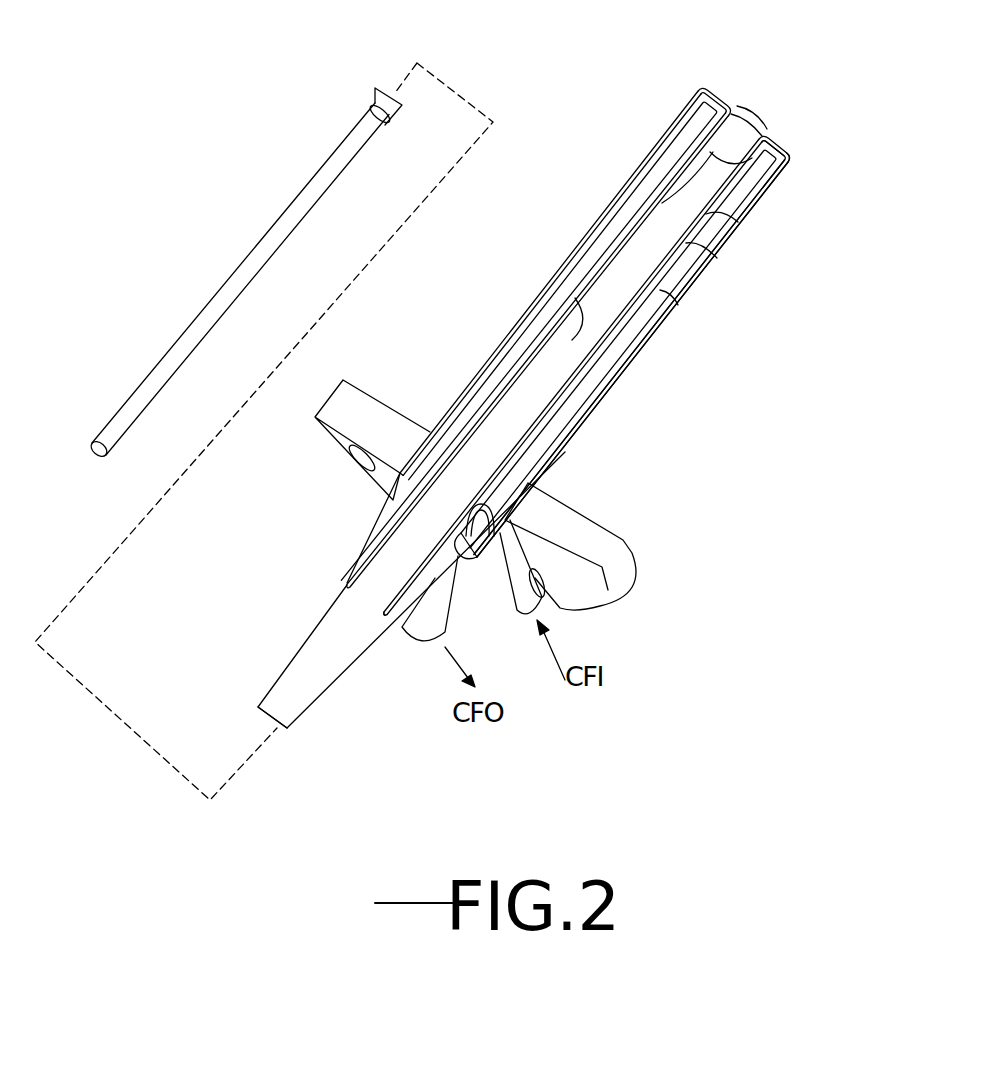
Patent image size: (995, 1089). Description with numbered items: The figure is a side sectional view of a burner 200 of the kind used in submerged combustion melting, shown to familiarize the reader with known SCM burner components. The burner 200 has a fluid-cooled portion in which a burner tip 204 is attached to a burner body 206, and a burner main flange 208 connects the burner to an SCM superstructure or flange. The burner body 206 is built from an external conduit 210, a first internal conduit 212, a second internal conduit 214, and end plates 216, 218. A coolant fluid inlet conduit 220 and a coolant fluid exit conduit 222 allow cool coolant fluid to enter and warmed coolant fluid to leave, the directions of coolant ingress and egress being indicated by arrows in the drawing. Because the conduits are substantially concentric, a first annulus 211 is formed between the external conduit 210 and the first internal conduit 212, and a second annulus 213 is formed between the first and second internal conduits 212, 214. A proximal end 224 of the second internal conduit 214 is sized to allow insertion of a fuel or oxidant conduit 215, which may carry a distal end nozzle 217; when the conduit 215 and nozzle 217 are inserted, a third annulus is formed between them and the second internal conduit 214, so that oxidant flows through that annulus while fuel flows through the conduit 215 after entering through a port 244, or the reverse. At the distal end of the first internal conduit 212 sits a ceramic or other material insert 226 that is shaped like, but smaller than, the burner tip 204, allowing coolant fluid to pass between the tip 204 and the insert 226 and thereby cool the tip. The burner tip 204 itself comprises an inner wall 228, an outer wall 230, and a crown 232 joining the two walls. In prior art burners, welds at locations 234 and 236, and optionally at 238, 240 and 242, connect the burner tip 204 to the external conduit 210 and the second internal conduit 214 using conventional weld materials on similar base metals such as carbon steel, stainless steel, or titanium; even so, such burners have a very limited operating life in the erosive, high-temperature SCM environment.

The burner 200 is at (750, 342).
The burner tip 204 is at (629, 340).
The burner body 206 is at (650, 347).
The burner main flange 208 is at (593, 520).
The external conduit 210 is at (590, 418).
The first annulus 211 is at (510, 365).
The first internal conduit 212 is at (713, 253).
The second annulus 213 is at (480, 423).
The second internal conduit 214 is at (678, 297).
The fuel or oxidant conduit 215 is at (242, 263).
The end plate 216 is at (460, 552).
The distal end nozzle 217 is at (374, 98).
The end plate 218 is at (387, 617).
The coolant fluid inlet conduit 220 is at (520, 607).
The coolant fluid exit conduit 222 is at (425, 640).
The proximal end 224 is at (290, 663).
The insert 226 is at (750, 150).
The inner wall 228 is at (750, 125).
The outer wall 230 is at (782, 178).
The crown 232 is at (792, 138).
The weld location 234 is at (662, 141).
The weld location 236 is at (657, 197).
The optional weld location 238 is at (577, 300).
The optional weld location 240 is at (535, 317).
The optional weld location 242 is at (745, 120).
The port 244 is at (283, 731).